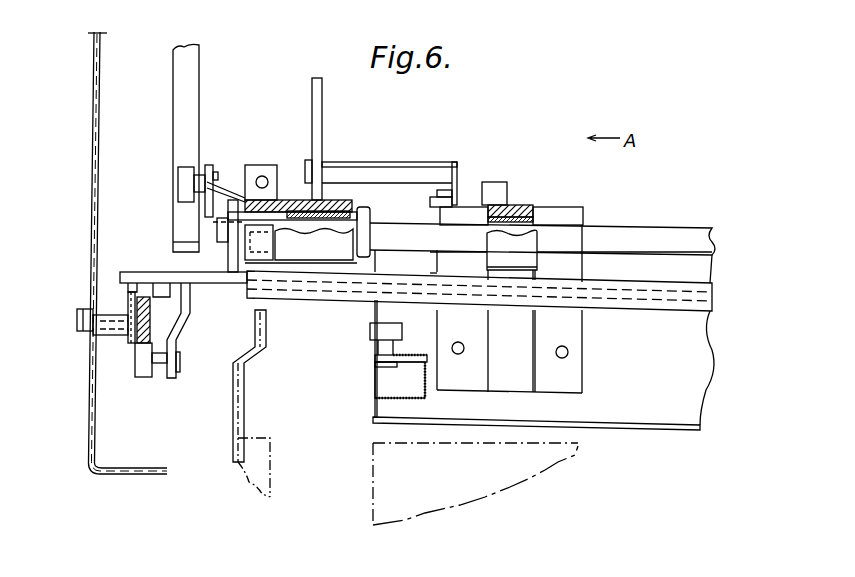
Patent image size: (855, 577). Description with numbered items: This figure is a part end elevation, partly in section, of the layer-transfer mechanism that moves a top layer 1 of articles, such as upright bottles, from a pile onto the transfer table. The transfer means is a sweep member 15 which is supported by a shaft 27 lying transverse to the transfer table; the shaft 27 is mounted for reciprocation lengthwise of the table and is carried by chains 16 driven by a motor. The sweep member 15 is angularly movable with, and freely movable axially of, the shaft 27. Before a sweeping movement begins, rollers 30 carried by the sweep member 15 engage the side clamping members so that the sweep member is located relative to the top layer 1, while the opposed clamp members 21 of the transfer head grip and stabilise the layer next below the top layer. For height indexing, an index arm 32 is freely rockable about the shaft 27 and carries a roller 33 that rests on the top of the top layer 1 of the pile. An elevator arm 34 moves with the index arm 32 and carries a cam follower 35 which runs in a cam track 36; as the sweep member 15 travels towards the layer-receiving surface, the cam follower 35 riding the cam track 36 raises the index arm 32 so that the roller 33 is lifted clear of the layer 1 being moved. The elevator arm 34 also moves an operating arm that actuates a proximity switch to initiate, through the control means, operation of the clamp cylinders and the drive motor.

The layer of articles 1 is at (383, 462).
The sweep member 15 is at (683, 410).
The chains 16 is at (141, 297).
The clamp members 21 is at (267, 330).
The shaft 27 is at (635, 230).
The rollers 30 is at (373, 332).
The index arm 32 is at (322, 130).
The roller 33 is at (508, 187).
The elevator arm 34 is at (222, 183).
The cam follower 35 is at (185, 182).
The cam track 36 is at (199, 92).